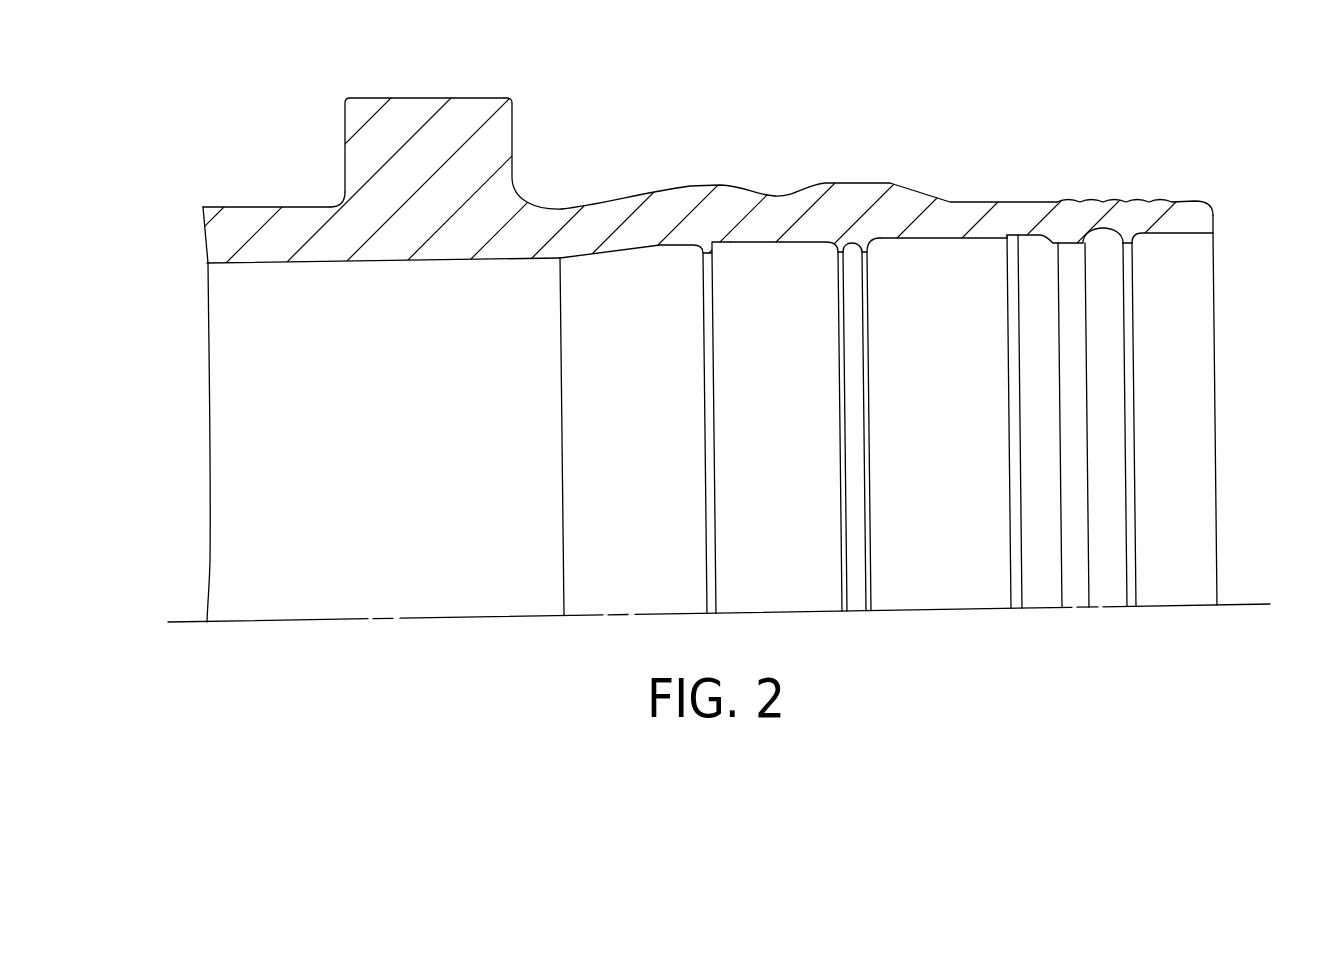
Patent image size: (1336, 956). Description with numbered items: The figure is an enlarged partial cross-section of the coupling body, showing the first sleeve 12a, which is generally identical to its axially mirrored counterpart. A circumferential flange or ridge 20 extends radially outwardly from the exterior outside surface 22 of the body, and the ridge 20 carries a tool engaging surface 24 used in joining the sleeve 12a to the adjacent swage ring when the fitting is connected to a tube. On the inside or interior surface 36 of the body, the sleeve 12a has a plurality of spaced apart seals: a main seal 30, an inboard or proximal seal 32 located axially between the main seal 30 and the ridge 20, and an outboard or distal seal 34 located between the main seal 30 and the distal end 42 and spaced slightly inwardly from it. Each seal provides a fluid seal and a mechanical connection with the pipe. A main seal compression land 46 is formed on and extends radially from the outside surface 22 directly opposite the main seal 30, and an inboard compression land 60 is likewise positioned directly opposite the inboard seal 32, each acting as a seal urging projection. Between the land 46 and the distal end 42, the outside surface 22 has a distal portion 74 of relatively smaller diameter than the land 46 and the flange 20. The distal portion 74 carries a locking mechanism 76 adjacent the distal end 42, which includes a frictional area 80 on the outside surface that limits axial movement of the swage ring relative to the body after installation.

The first sleeve 12a is at (672, 155).
The circumferential flange 20 is at (460, 112).
The exterior outside surface 22 is at (268, 205).
The tool engaging surface 24 is at (343, 133).
The main seal 30 is at (852, 248).
The inboard seal 32 is at (705, 258).
The outboard seal 34 is at (1137, 247).
The interior surface 36 is at (397, 262).
The distal end 42 is at (1214, 217).
The main seal compression land 46 is at (848, 213).
The inboard compression land 60 is at (712, 213).
The distal portion 74 is at (1000, 200).
The locking mechanism 76 is at (1110, 200).
The frictional area 80 is at (1152, 200).